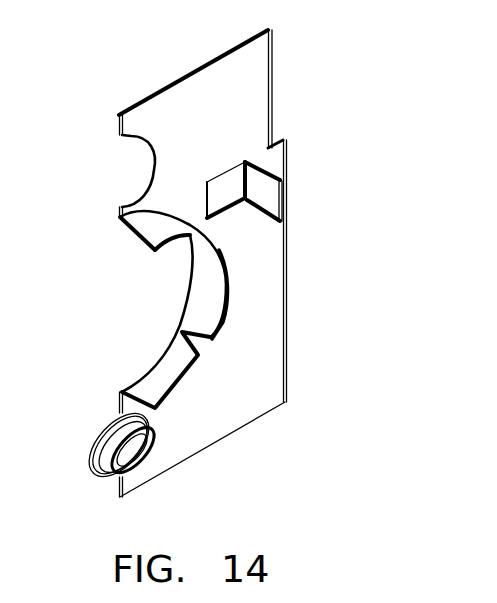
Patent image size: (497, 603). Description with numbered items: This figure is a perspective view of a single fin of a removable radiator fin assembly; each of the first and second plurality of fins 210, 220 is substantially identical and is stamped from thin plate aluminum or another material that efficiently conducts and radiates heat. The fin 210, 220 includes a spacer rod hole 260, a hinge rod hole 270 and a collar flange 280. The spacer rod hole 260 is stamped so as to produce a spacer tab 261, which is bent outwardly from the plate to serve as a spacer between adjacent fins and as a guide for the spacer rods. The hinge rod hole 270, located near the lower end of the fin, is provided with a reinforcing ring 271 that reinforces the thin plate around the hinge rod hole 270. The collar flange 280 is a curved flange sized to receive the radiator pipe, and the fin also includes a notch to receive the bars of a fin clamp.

The fin 210 is at (240, 277).
The fin 220 is at (240, 277).
The spacer rod hole 260 is at (233, 146).
The spacer tab 261 is at (265, 198).
The hinge rod hole 270 is at (137, 452).
The reinforcing ring 271 is at (158, 447).
The collar flange 280 is at (163, 375).